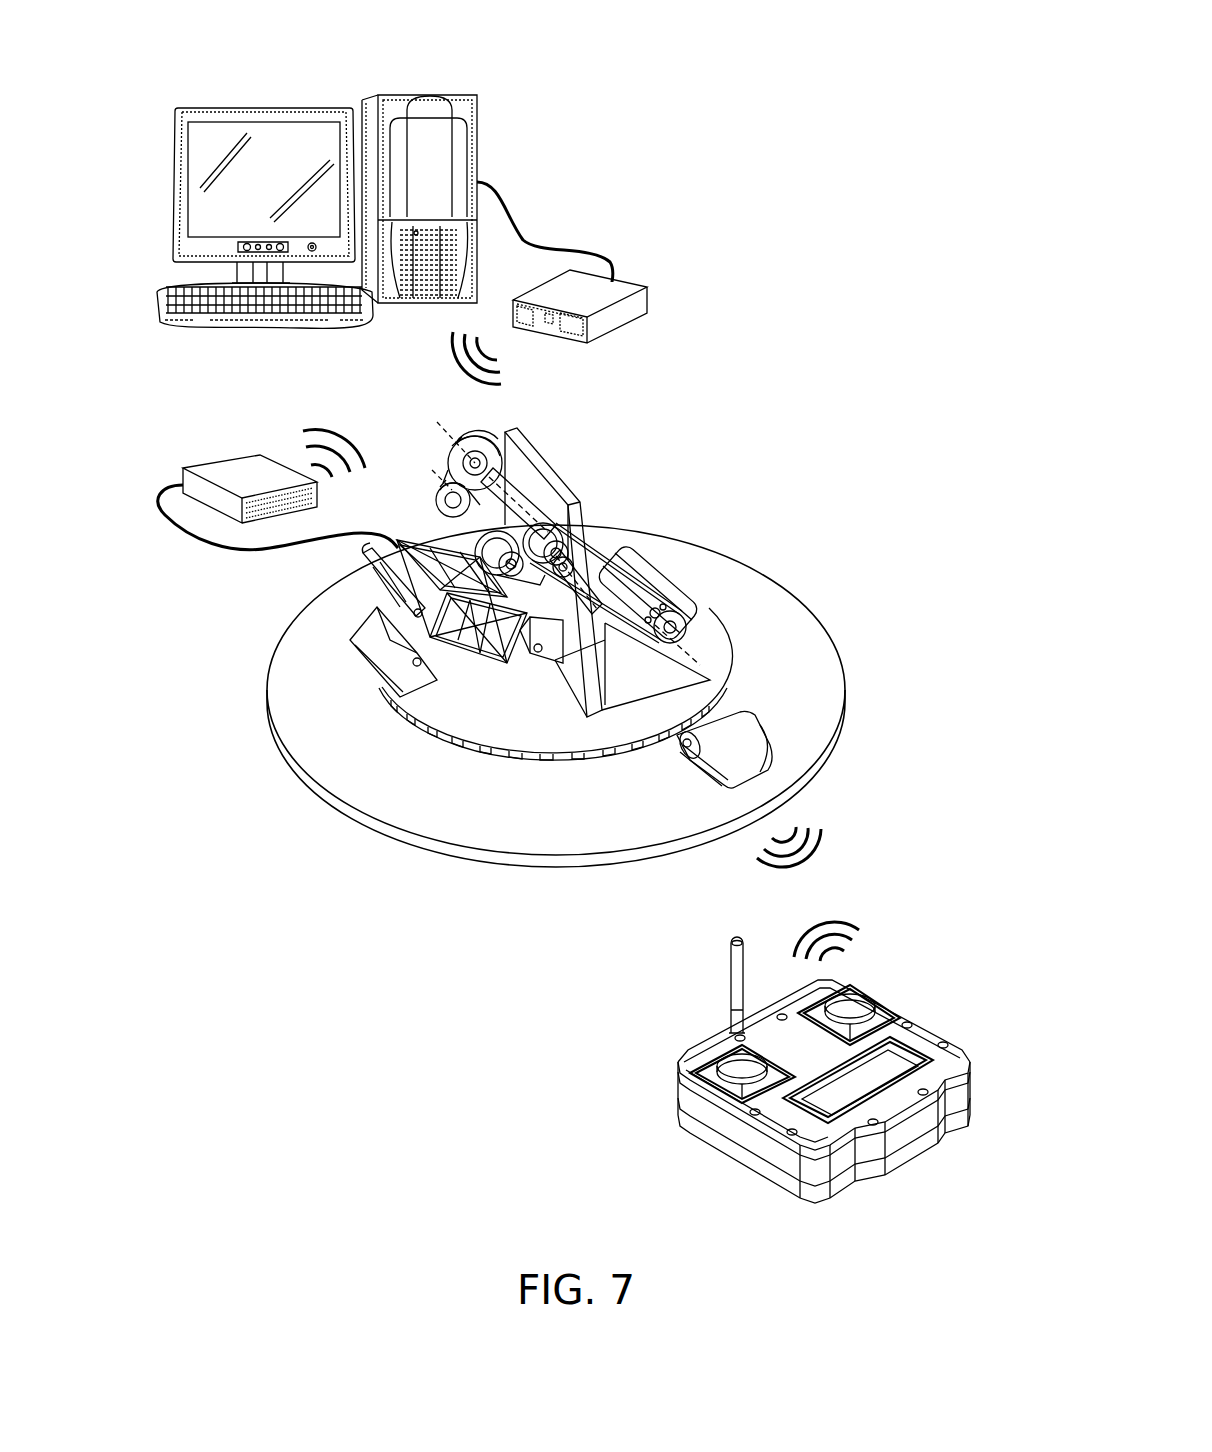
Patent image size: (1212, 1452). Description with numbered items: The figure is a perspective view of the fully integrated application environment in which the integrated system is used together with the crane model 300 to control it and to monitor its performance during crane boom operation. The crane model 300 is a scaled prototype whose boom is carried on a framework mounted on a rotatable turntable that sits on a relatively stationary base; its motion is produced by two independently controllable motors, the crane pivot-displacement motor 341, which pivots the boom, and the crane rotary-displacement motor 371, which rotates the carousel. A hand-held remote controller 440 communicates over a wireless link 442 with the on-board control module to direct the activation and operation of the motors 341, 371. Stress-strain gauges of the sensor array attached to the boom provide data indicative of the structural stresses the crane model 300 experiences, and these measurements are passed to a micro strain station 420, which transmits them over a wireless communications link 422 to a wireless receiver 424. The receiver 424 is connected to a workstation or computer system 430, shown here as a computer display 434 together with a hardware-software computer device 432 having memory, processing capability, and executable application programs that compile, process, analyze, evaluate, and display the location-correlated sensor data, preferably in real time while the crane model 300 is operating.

The crane model 300 is at (775, 513).
The crane pivot-displacement motor 341 is at (633, 560).
The crane rotary-displacement motor 371 is at (767, 772).
The micro strain station 420 is at (203, 443).
The wireless communications link 422 is at (292, 432).
The wireless receiver 424 is at (657, 267).
The computer system 430 is at (285, 92).
The hardware-software computer device 432 is at (407, 87).
The computer display 434 is at (172, 167).
The remote controller 440 is at (937, 1017).
The wireless link 442 is at (882, 925).